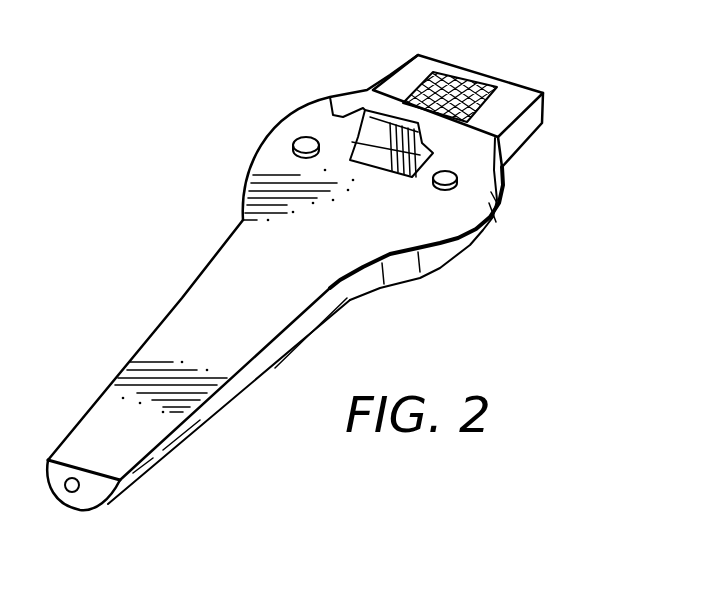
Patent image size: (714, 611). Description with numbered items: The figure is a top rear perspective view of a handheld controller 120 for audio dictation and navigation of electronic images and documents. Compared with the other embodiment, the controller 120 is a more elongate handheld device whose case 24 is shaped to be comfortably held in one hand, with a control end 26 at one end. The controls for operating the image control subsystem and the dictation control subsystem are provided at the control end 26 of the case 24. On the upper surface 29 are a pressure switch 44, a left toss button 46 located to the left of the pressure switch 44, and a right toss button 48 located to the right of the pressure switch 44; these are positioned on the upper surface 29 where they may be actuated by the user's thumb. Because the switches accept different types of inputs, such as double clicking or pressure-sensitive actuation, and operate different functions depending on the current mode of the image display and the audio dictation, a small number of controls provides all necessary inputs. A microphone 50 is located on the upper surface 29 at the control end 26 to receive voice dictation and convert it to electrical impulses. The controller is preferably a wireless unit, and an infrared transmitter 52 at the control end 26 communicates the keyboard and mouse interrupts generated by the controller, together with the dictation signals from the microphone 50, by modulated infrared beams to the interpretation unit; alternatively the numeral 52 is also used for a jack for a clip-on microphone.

The handheld controller 120 is at (521, 215).
The case 24 is at (193, 433).
The control end 26 is at (389, 74).
The upper surface 29 is at (183, 332).
The pressure switch 44 is at (332, 100).
The left toss button 46 is at (305, 145).
The right toss button 48 is at (447, 182).
The microphone 50 is at (449, 81).
The infrared transmitter 52 is at (513, 80).